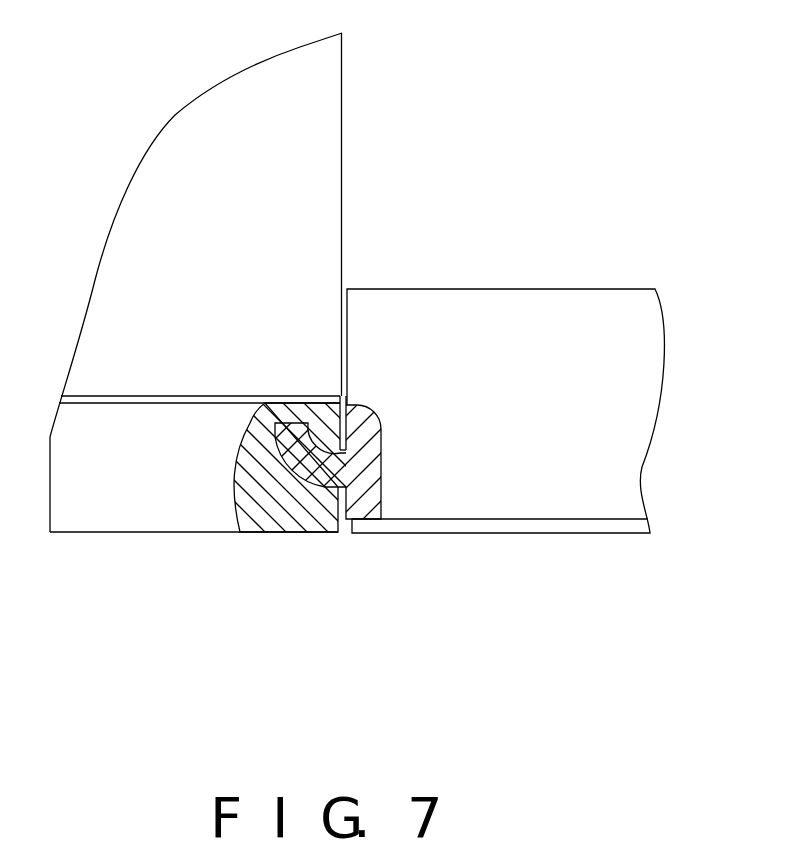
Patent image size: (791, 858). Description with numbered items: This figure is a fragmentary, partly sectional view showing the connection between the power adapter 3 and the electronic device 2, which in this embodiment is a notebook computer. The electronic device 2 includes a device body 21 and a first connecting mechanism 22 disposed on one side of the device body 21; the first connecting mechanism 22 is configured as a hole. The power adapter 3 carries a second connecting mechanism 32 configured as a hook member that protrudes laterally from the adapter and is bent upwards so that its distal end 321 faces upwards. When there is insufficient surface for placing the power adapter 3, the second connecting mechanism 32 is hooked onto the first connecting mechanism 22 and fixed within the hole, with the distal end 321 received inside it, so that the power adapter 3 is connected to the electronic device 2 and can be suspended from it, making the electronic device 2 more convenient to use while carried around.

The electronic device 2 is at (384, 78).
The device body 21 is at (163, 532).
The first connecting mechanism 22 is at (285, 463).
The power adapter 3 is at (473, 560).
The second connecting mechanism 32 is at (317, 467).
The distal end 321 is at (292, 433).